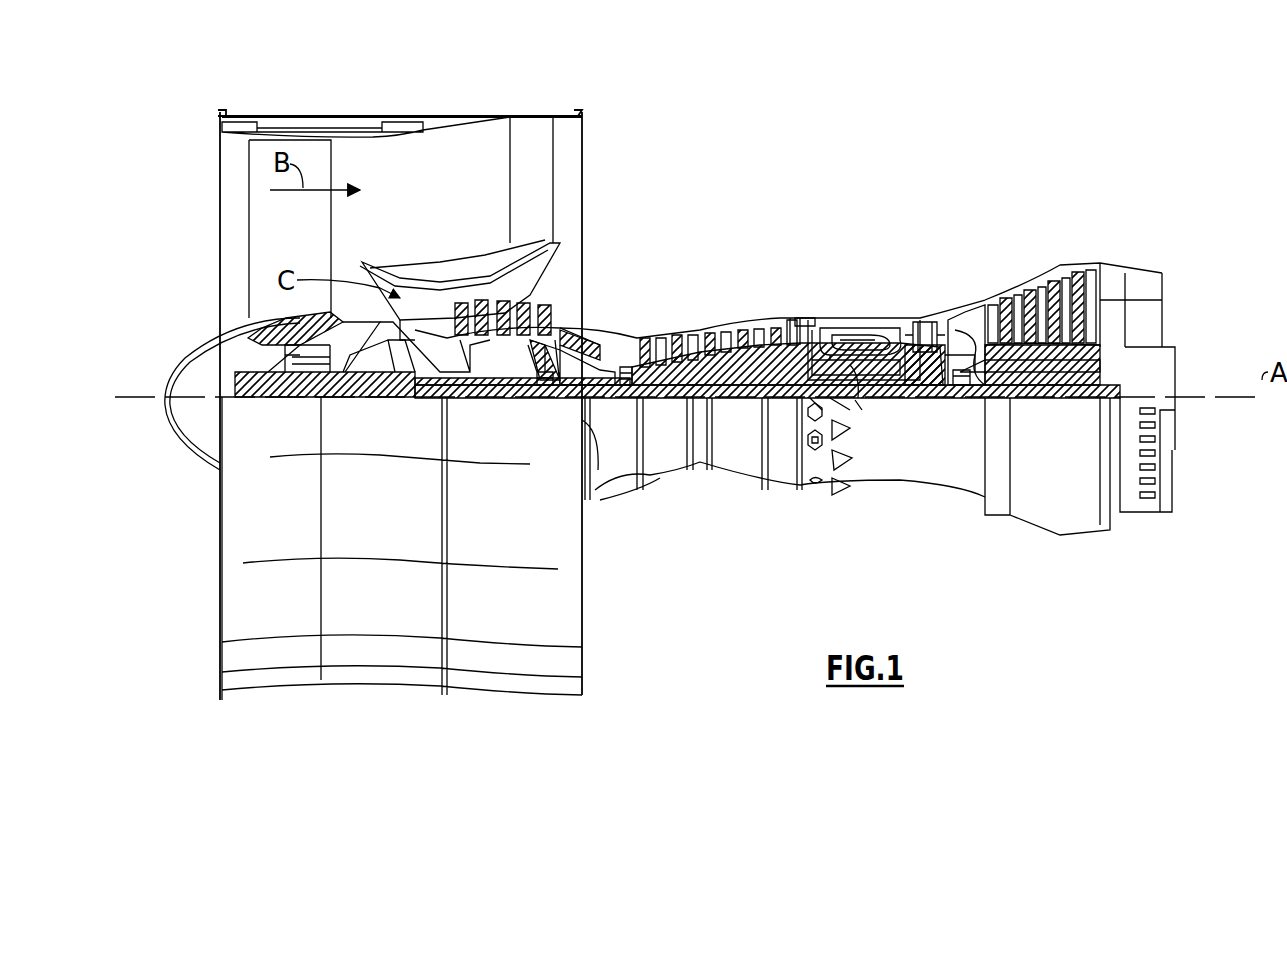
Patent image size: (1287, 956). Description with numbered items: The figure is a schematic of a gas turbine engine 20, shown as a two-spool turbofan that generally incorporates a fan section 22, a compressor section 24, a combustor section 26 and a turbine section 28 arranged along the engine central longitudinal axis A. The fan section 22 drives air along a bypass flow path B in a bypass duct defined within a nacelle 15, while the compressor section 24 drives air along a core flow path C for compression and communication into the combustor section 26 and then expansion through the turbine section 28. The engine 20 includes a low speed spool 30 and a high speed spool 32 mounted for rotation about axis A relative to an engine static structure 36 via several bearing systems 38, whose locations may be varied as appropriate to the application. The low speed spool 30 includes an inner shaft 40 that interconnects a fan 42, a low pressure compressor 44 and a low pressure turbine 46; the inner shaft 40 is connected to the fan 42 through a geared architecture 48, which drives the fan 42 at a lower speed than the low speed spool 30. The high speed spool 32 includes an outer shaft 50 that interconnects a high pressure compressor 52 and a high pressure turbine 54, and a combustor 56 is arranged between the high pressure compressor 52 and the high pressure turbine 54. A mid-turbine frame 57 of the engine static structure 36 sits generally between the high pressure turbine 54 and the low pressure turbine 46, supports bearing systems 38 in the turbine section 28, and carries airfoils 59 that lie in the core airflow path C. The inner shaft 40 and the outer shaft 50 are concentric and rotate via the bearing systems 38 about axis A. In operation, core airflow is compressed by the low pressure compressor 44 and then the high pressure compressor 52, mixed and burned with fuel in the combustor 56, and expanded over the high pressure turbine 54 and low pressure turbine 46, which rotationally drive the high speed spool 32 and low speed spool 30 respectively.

The nacelle 15 is at (398, 118).
The gas turbine engine 20 is at (860, 165).
The fan section 22 is at (330, 103).
The compressor section 24 is at (637, 300).
The combustor section 26 is at (856, 290).
The turbine section 28 is at (1005, 255).
The low speed spool 30 is at (742, 410).
The high speed spool 32 is at (779, 365).
The engine static structure 36 is at (781, 490).
The bearing systems 38 is at (542, 386).
The inner shaft 40 is at (607, 410).
The fan 42 is at (308, 247).
The low pressure compressor 44 is at (505, 312).
The low pressure turbine 46 is at (1045, 285).
The geared architecture 48 is at (400, 380).
The outer shaft 50 is at (865, 400).
The high pressure compressor 52 is at (715, 332).
The high pressure turbine 54 is at (920, 320).
The combustor 56 is at (862, 338).
The mid-turbine frame 57 is at (962, 305).
The airfoils 59 is at (1000, 368).